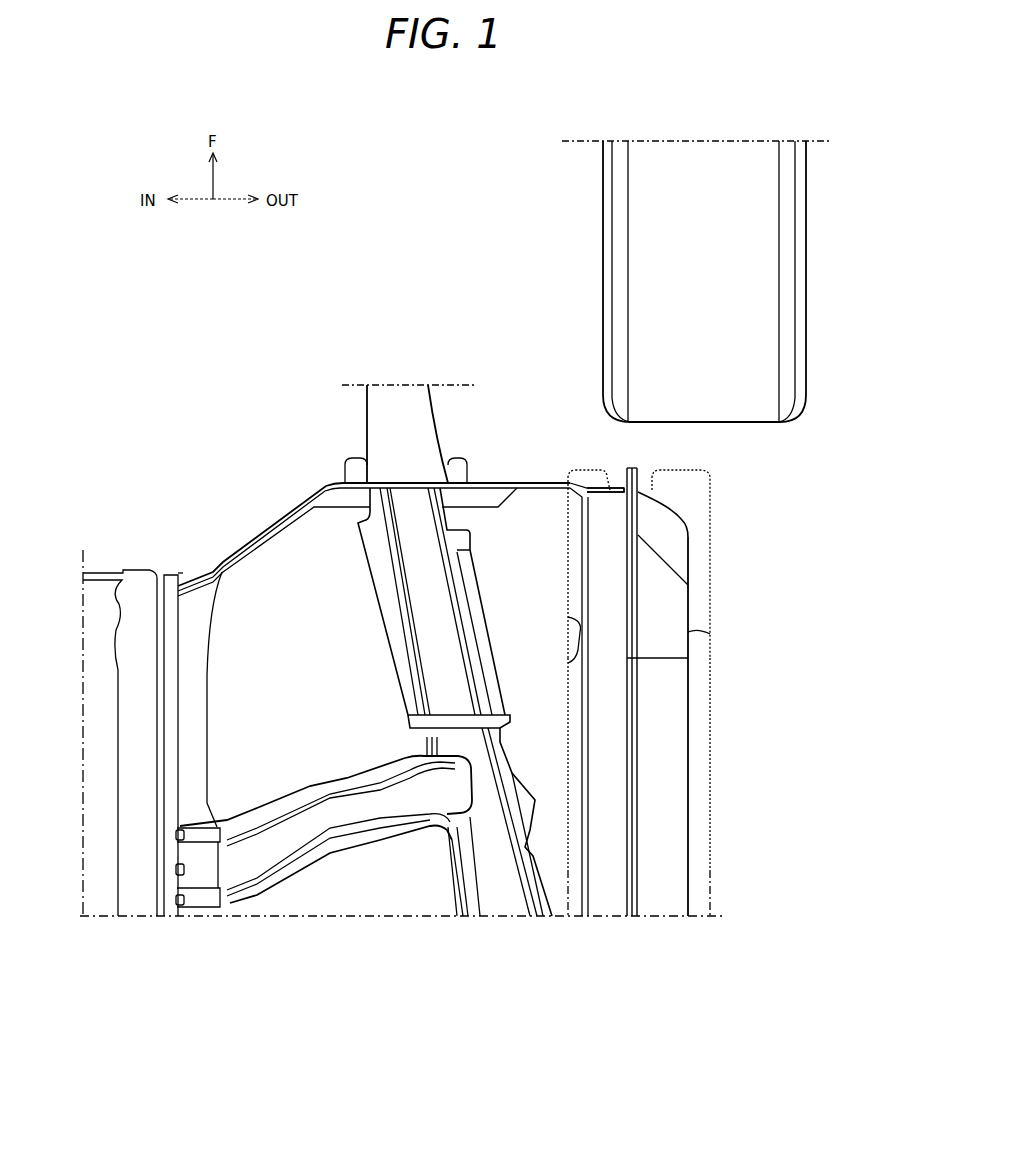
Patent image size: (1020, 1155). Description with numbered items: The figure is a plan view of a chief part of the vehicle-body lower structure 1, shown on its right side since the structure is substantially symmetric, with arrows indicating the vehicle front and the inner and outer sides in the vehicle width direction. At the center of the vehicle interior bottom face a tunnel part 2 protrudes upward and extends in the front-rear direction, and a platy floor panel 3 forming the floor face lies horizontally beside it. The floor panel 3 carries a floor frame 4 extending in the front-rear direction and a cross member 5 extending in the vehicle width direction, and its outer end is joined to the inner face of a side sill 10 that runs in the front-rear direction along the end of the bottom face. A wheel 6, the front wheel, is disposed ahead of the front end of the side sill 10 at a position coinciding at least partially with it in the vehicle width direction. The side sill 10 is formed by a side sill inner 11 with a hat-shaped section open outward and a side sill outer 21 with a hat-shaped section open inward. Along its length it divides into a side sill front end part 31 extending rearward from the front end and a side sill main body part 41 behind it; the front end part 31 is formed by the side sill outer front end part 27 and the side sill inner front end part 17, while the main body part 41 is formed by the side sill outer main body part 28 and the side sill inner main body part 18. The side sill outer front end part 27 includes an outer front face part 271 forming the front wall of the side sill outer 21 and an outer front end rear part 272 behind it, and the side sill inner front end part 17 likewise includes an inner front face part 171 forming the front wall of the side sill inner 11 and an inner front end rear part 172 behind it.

The vehicle-body lower structure 1 is at (226, 334).
The tunnel part 2 is at (83, 688).
The floor panel 3 is at (284, 545).
The floor frame 4 is at (398, 618).
The cross member 5 is at (303, 788).
The wheel 6 is at (603, 259).
The side sill 10 is at (740, 600).
The side sill inner 11 is at (583, 702).
The side sill inner front end part 17 is at (573, 557).
The side sill inner main body part 18 is at (573, 745).
The side sill outer 21 is at (692, 714).
The side sill outer front end part 27 is at (707, 557).
The side sill outer main body part 28 is at (707, 745).
The side sill front end part 31 is at (577, 992).
The side sill main body part 41 is at (658, 992).
The inner front face part 171 is at (611, 488).
The inner front end rear part 172 is at (583, 620).
The outer front face part 271 is at (657, 508).
The outer front end rear part 272 is at (712, 632).